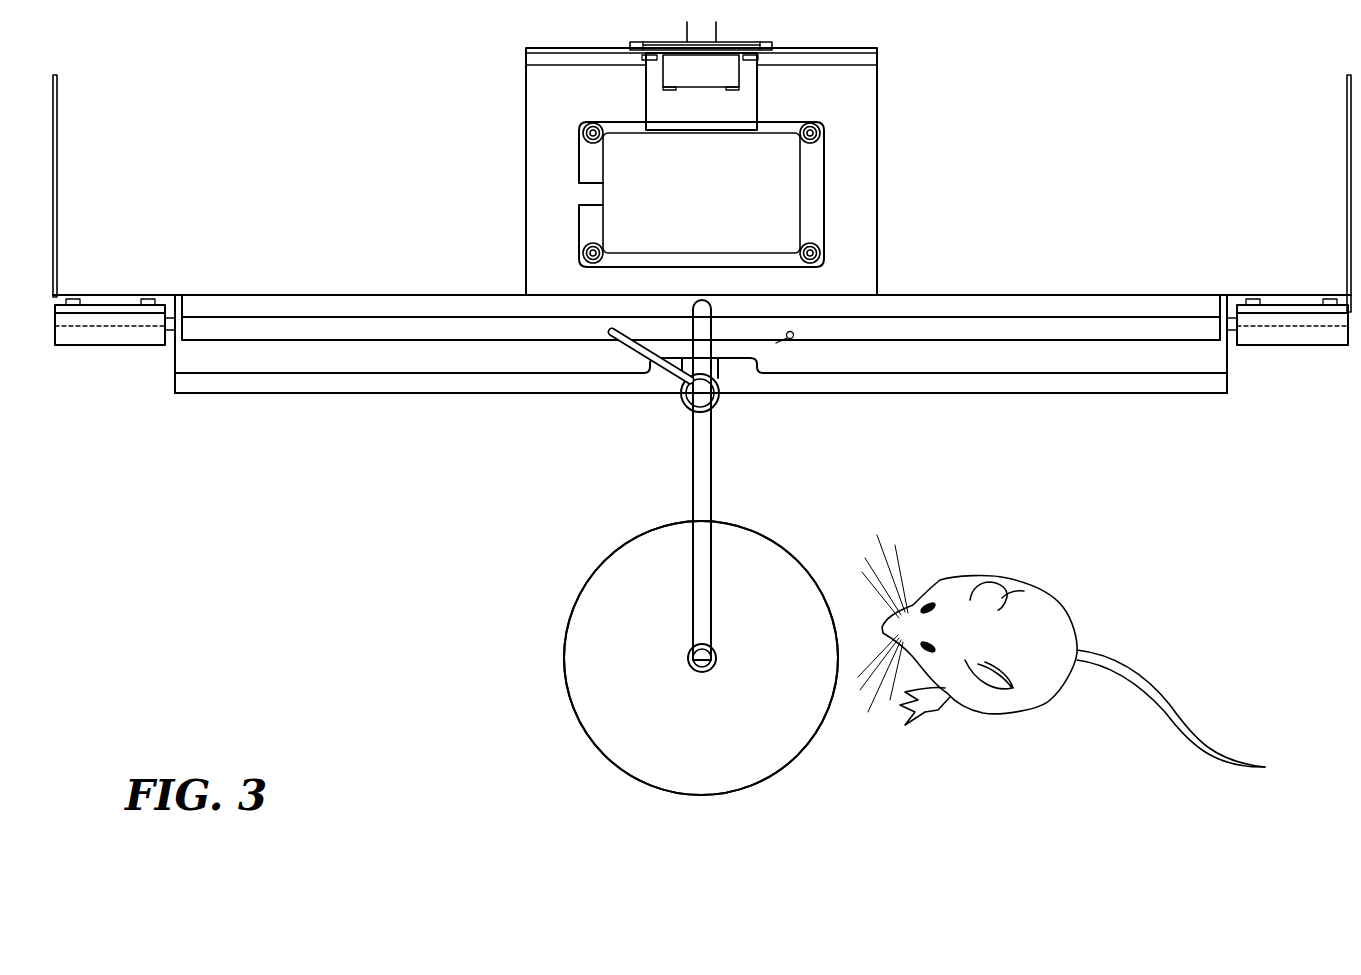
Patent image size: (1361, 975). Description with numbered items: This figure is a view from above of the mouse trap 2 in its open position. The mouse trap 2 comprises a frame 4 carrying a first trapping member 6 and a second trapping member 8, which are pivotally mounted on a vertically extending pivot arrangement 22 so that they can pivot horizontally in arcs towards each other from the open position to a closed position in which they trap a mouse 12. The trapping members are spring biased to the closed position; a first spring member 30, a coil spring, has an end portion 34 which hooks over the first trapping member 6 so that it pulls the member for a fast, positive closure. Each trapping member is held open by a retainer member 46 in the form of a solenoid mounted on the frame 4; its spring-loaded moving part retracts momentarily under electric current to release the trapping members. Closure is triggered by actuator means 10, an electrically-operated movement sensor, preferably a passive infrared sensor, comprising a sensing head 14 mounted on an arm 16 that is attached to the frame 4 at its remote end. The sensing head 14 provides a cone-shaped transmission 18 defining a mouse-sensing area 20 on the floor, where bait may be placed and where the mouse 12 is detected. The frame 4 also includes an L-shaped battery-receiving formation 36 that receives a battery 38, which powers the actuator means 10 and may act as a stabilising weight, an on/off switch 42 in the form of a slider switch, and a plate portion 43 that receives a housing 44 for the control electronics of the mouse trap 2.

The mouse trap 2 is at (1068, 168).
The frame 4 is at (291, 287).
The first trapping member 6 is at (349, 405).
The second trapping member 8 is at (1056, 405).
The actuator means 10 is at (676, 643).
The mouse 12 is at (1055, 596).
The sensing head 14 is at (690, 668).
The arm 16 is at (693, 484).
The cone-shaped transmission 18 is at (603, 560).
The mouse-sensing area 20 is at (701, 658).
The pivot arrangement 22 is at (726, 420).
The first spring member 30 is at (686, 404).
The end portion 34 is at (644, 345).
The battery-receiving formation 36 is at (518, 147).
The battery 38 is at (700, 91).
The on/off switch 42 is at (692, 66).
The plate portion 43 is at (856, 220).
The housing 44 is at (701, 194).
The retainer member 46 is at (100, 335).